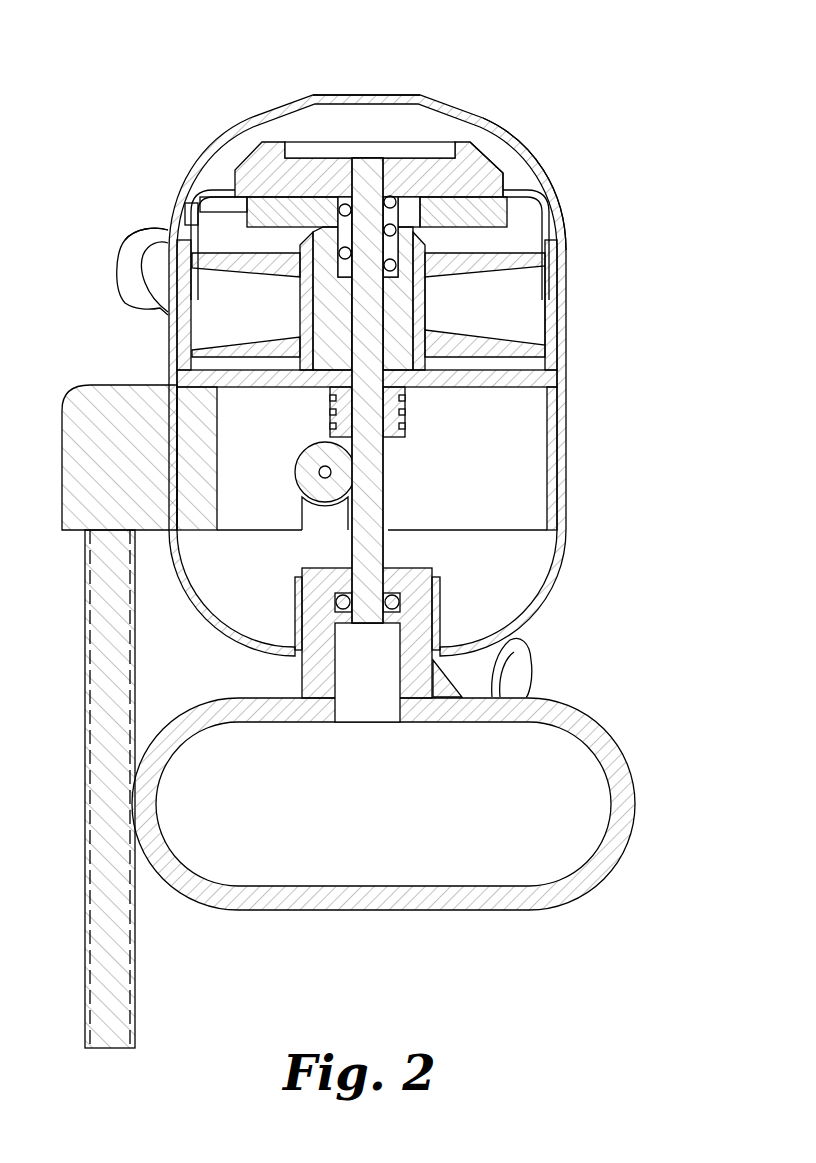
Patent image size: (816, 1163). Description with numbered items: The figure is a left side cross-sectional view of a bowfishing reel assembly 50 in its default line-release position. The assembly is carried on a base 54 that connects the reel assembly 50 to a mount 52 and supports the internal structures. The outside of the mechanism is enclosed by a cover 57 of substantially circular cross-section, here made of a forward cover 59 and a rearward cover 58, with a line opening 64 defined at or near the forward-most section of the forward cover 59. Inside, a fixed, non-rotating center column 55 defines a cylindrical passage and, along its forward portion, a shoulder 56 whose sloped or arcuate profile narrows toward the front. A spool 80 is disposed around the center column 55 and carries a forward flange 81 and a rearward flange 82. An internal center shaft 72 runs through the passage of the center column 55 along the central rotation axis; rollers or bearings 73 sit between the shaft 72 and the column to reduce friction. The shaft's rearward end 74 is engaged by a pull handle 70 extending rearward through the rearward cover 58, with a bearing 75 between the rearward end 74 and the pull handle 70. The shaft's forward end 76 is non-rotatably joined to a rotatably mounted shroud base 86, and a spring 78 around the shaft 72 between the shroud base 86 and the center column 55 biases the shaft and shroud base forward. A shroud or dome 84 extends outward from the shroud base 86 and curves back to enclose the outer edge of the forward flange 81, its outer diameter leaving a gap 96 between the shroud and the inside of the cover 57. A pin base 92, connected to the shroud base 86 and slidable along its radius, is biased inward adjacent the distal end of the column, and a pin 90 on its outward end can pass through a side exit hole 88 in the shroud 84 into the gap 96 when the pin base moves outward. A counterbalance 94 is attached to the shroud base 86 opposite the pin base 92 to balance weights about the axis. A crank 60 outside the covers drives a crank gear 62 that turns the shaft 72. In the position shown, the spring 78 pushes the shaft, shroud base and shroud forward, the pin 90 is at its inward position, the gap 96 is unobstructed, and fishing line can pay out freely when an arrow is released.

The reel assembly 50 is at (597, 147).
The mount 52 is at (110, 973).
The base 54 is at (195, 390).
The center column 55 is at (407, 312).
The shoulder 56 is at (312, 243).
The cover 57 is at (565, 375).
The rearward cover 58 is at (562, 560).
The forward cover 59 is at (565, 195).
The crank 60 is at (143, 262).
The crank gear 62 is at (300, 466).
The line opening 64 is at (362, 95).
The pull handle 70 is at (540, 897).
The internal center shaft 72 is at (370, 547).
The rollers or bearings 73 is at (407, 420).
The rearward end 74 is at (368, 602).
The bearing 75 is at (298, 583).
The forward end 76 is at (413, 150).
The spring 78 is at (328, 195).
The spool 80 is at (518, 345).
The forward flange 81 is at (493, 267).
The rearward flange 82 is at (520, 323).
The shroud or dome 84 is at (528, 192).
The shroud base 86 is at (462, 172).
The side exit hole 88 is at (186, 213).
The pin 90 is at (208, 205).
The pin base 92 is at (258, 208).
The counterbalance 94 is at (467, 215).
The gap 96 is at (160, 245).